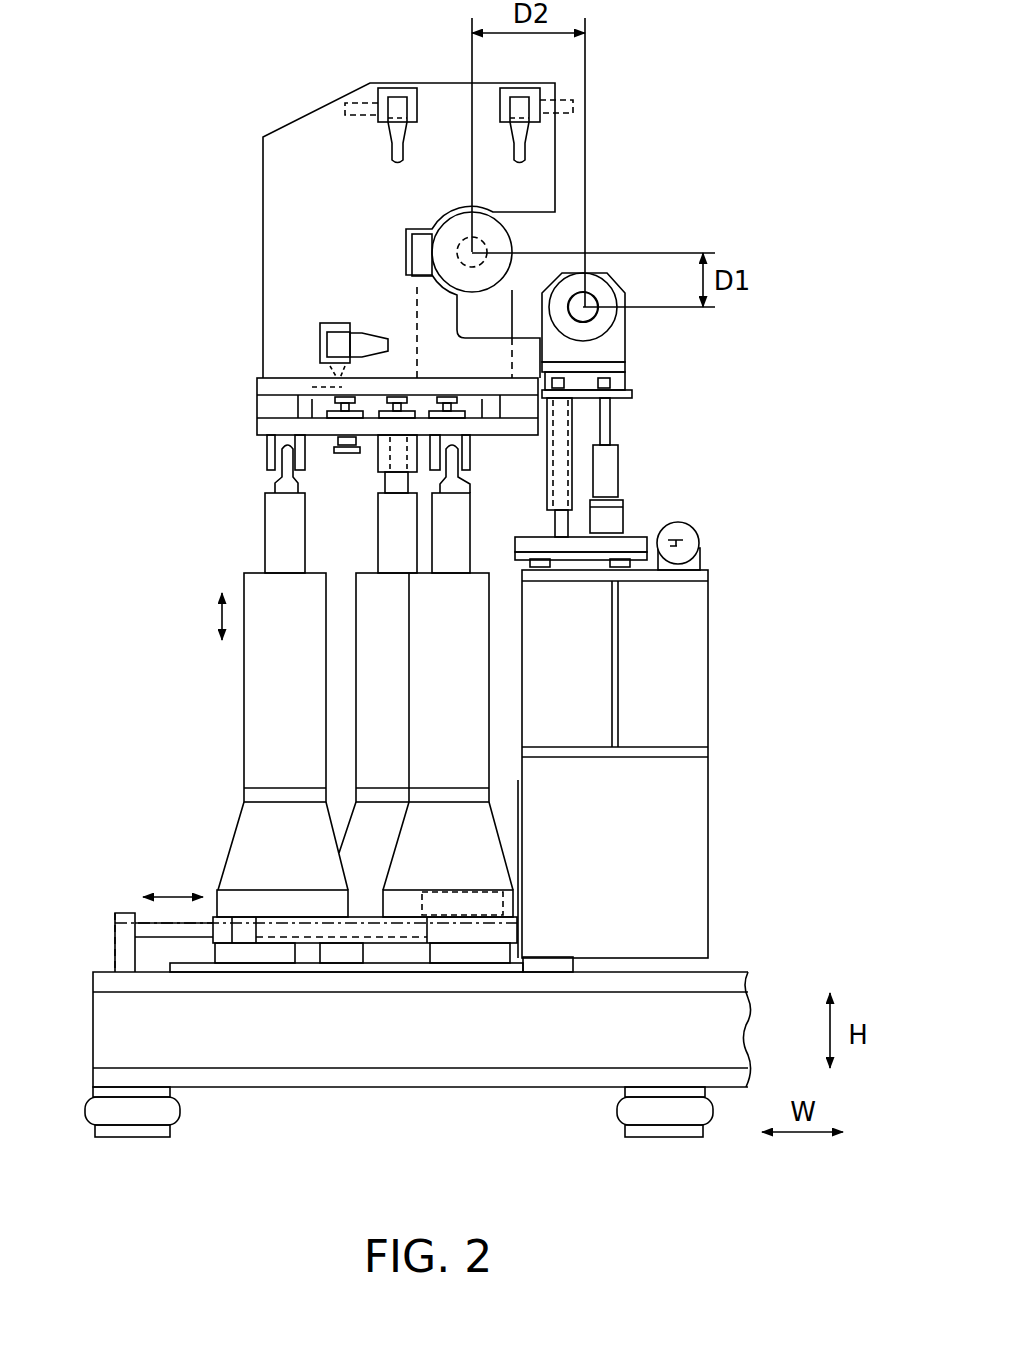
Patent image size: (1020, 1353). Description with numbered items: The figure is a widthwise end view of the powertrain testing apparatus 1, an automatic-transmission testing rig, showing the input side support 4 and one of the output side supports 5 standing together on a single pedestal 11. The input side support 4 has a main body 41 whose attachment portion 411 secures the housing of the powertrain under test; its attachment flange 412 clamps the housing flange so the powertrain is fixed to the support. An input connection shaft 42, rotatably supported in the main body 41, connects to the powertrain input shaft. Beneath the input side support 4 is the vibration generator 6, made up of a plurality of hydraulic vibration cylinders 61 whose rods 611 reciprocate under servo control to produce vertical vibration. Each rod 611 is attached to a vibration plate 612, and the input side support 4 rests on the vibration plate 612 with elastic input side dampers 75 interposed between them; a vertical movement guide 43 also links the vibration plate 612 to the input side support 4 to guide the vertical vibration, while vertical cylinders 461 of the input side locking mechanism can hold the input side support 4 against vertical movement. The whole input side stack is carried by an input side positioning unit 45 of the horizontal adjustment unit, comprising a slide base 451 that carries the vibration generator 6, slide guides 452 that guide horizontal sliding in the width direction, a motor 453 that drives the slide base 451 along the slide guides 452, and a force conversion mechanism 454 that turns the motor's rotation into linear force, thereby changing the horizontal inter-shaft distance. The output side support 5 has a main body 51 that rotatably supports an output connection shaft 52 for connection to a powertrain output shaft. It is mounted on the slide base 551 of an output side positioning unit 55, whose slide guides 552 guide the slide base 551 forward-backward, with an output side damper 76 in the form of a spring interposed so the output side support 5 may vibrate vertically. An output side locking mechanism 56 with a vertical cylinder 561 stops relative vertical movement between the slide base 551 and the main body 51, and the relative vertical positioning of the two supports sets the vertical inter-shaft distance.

The powertrain testing apparatus 1 is at (640, 133).
The input side support 4 is at (318, 108).
The main body 41 is at (263, 190).
The attachment portion 411 is at (328, 288).
The attachment flange 412 is at (403, 133).
The input connection shaft 42 is at (453, 250).
The input side dampers 75 is at (275, 407).
The vibration plate 612 is at (270, 428).
The vertical movement guide 43 is at (340, 448).
The vertical cylinders 461 is at (377, 458).
The rod 611 is at (283, 532).
The vibration generator 6 is at (233, 768).
The vibration cylinders 61 is at (280, 665).
The input side positioning unit 45 is at (528, 907).
The output side supports 5 is at (610, 260).
The output connection shafts 52 is at (583, 322).
The main body 51 is at (627, 368).
The output side damper 76 is at (562, 428).
The output side locking mechanism 56 is at (637, 493).
The vertical cylinder 561 is at (608, 473).
The output side positioning unit 55 is at (707, 545).
The slide base 551 is at (635, 545).
The slide guides 552 is at (618, 560).
The pedestal 11 is at (390, 1030).
The slide base 451 is at (502, 950).
The slide guides 452 is at (273, 957).
The motor 453 is at (458, 955).
The force conversion mechanism 454 is at (188, 930).